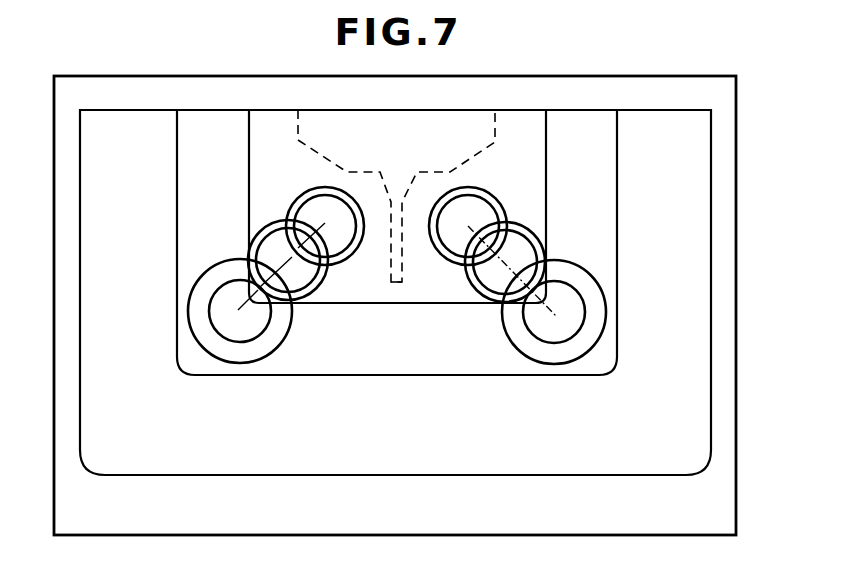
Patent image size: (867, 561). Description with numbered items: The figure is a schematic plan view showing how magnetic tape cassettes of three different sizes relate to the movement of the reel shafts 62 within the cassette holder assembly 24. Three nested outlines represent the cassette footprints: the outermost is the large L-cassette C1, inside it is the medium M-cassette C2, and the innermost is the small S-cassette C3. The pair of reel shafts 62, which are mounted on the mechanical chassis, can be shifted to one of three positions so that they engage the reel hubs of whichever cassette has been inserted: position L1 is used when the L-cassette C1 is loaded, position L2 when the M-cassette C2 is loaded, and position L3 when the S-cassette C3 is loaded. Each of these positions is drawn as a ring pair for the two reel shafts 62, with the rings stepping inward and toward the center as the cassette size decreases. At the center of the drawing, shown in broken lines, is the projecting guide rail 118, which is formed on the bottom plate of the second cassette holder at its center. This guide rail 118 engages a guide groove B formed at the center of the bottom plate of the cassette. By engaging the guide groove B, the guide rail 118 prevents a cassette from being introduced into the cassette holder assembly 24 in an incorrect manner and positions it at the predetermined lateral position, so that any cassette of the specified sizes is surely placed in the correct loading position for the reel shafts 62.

The cassette holder assembly 24 is at (736, 490).
The reel shafts 62 is at (277, 222).
The projecting guide rail 118 is at (404, 267).
The guide groove B is at (397, 176).
The L-cassette C1 is at (328, 473).
The M-cassette C2 is at (422, 375).
The S-cassette C3 is at (350, 303).
The reel shaft position for L-cassette L1 is at (187, 305).
The reel shaft position for M-cassette L2 is at (252, 238).
The reel shaft position for S-cassette L3 is at (288, 208).